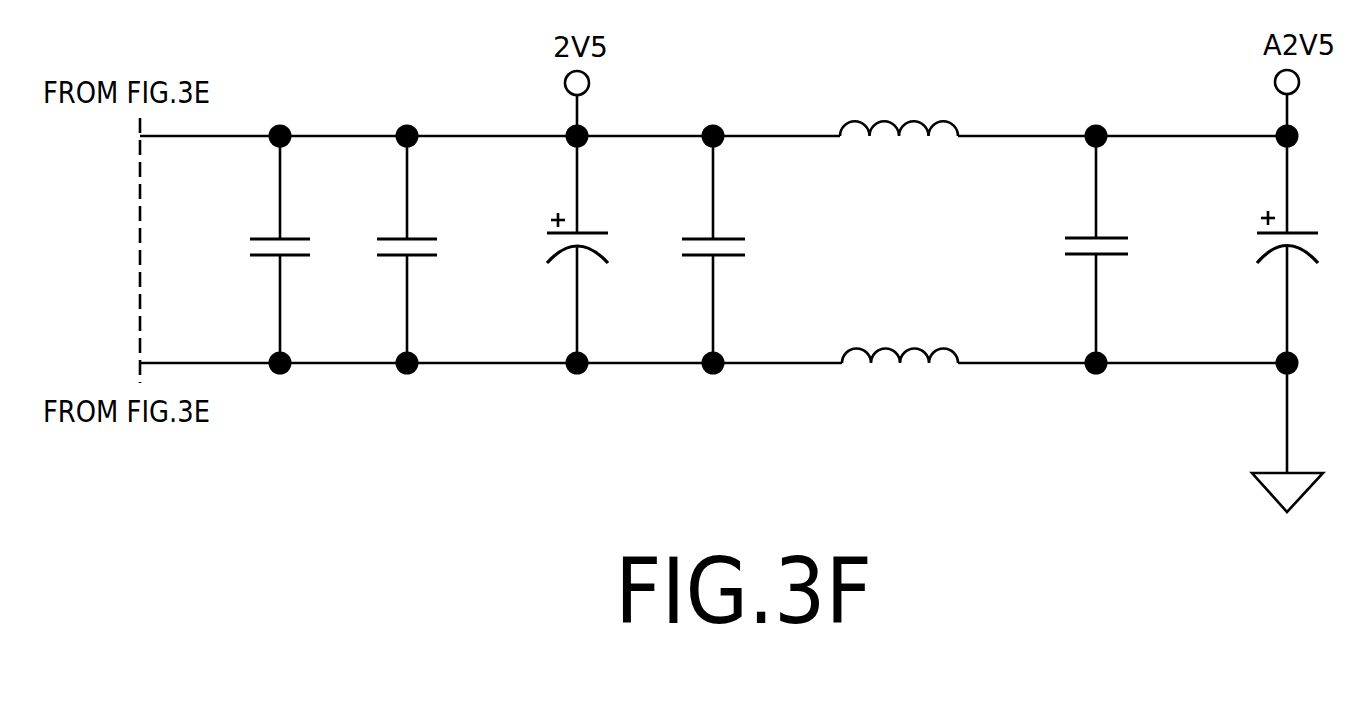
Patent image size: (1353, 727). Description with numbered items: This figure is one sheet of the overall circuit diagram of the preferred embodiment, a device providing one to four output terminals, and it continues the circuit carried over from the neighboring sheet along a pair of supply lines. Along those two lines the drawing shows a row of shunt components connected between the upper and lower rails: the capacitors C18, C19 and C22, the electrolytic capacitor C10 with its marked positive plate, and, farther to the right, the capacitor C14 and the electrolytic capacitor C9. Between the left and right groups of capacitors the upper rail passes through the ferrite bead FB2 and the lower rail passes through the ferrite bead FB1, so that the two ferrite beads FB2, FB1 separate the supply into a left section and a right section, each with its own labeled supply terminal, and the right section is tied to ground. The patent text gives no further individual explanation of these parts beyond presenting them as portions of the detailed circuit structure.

The capacitor 104Z C18 is at (239, 249).
The capacitor 104Z C19 is at (375, 249).
The electrolytic capacitor CE22U 16V C10 is at (525, 249).
The capacitor 104Z C22 is at (680, 249).
The ferrite bead inductor FB2 is at (899, 105).
The ferrite bead inductor FB1 is at (900, 330).
The capacitor 104Z C14 is at (1063, 249).
The electrolytic capacitor CE22U 16V C9 is at (1236, 249).